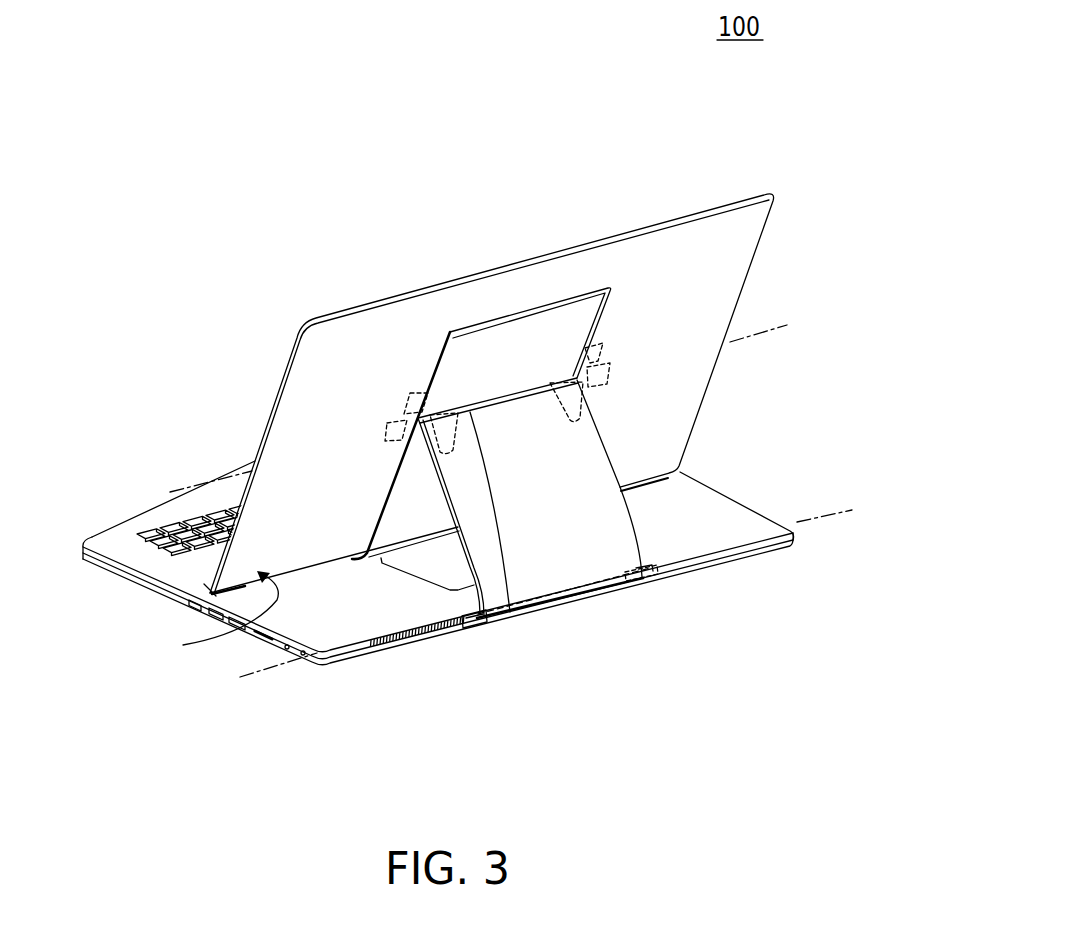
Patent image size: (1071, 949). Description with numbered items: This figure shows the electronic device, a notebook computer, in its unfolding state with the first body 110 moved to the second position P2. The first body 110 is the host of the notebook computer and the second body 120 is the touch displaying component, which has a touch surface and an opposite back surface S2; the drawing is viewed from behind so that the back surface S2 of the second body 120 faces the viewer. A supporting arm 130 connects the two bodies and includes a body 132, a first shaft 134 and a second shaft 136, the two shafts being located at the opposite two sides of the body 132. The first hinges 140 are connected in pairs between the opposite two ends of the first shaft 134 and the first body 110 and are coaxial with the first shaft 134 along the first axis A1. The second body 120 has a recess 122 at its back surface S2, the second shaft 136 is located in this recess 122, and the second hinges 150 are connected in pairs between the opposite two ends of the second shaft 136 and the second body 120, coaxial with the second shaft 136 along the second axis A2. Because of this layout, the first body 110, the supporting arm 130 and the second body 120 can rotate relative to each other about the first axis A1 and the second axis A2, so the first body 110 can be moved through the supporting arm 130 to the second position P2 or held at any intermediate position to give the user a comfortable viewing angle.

The first body 110 is at (121, 566).
The second body 120 is at (353, 321).
The recess 122 is at (525, 343).
The supporting arm 130 is at (556, 542).
The body 132 is at (543, 571).
The first shaft 134 is at (608, 592).
The second shaft 136 is at (517, 618).
The first hinge 140 is at (478, 628).
The second hinge 150 is at (380, 410).
The first axis A1 is at (248, 678).
The second axis A2 is at (187, 485).
The second position P2 is at (193, 578).
The back surface S2 is at (214, 617).